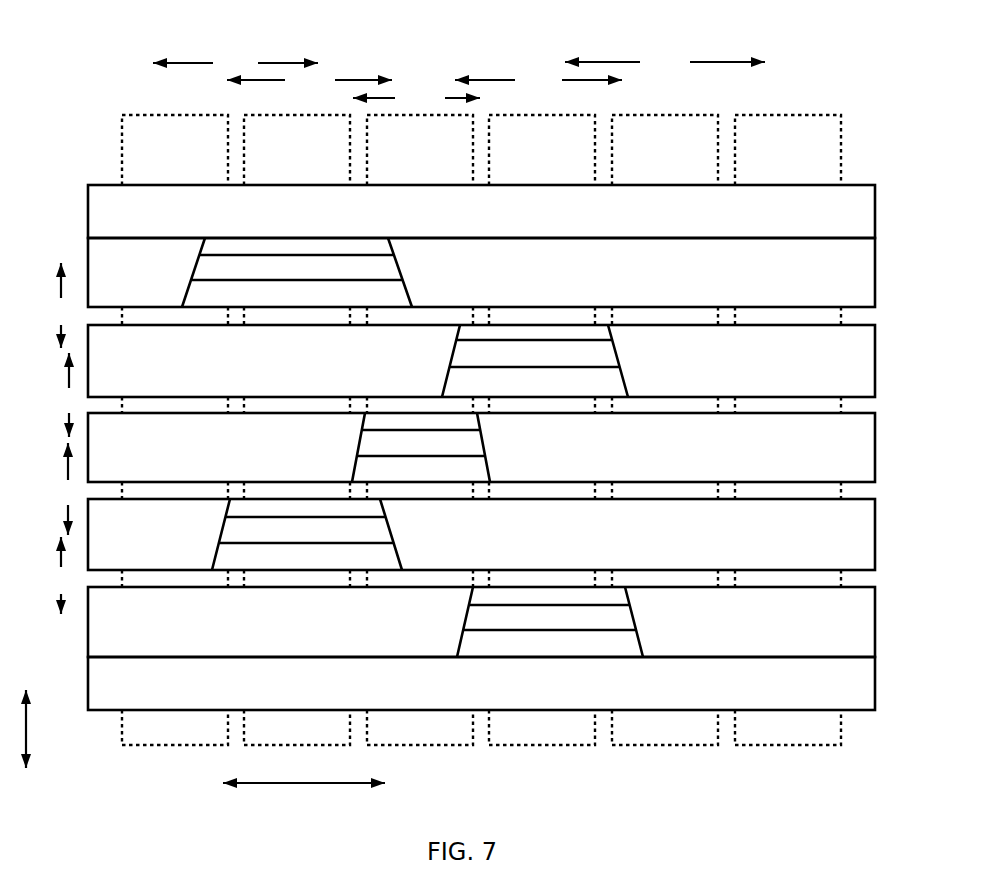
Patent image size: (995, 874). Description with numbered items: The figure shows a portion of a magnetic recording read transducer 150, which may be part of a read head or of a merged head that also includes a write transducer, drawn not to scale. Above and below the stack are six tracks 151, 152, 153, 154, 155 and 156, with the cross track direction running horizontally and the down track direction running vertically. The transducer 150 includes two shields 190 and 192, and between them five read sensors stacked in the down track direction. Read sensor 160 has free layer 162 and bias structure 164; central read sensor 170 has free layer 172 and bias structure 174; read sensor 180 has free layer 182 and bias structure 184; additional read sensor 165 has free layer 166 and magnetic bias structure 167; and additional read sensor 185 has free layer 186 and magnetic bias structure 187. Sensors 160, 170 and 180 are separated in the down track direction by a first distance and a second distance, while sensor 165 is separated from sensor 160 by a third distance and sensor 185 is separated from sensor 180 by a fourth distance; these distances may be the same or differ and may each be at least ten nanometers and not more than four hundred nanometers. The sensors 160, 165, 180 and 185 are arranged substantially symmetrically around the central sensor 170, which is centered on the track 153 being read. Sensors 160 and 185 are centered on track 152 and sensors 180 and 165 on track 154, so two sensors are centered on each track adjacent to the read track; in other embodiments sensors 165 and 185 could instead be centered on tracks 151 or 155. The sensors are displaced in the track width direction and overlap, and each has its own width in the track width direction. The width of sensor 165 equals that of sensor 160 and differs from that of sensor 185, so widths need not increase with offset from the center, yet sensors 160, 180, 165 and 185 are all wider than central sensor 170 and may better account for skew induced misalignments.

The magnetic recording read transducer 150 is at (490, 22).
The track 151 is at (175, 430).
The track 152 is at (297, 430).
The track 153 is at (420, 430).
The track 154 is at (542, 430).
The track 155 is at (665, 430).
The track 156 is at (788, 430).
The read sensor 160 is at (481, 641).
The free layer 162 is at (307, 534).
The bias structure 164 is at (481, 534).
The read sensor 165 is at (481, 683).
The free layer 166 is at (550, 622).
The magnetic bias structure 167 is at (481, 622).
The read sensor 170 is at (481, 597).
The free layer 172 is at (421, 447).
The bias structure 174 is at (481, 447).
The read sensor 180 is at (481, 241).
The free layer 182 is at (535, 361).
The bias structure 184 is at (481, 361).
The read sensor 185 is at (481, 195).
The free layer 186 is at (297, 272).
The magnetic bias structure 187 is at (481, 272).
The shield 190 is at (481, 683).
The shield 192 is at (481, 211).